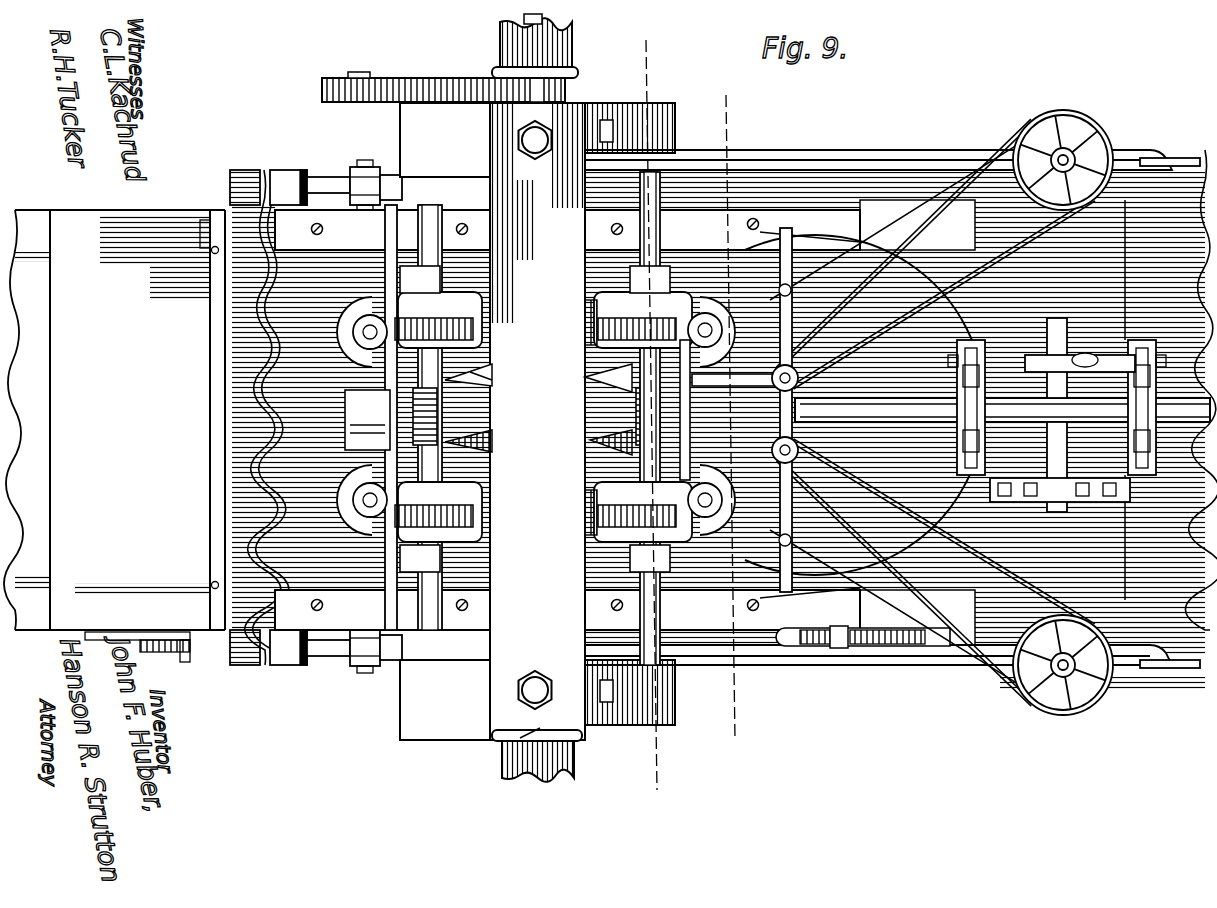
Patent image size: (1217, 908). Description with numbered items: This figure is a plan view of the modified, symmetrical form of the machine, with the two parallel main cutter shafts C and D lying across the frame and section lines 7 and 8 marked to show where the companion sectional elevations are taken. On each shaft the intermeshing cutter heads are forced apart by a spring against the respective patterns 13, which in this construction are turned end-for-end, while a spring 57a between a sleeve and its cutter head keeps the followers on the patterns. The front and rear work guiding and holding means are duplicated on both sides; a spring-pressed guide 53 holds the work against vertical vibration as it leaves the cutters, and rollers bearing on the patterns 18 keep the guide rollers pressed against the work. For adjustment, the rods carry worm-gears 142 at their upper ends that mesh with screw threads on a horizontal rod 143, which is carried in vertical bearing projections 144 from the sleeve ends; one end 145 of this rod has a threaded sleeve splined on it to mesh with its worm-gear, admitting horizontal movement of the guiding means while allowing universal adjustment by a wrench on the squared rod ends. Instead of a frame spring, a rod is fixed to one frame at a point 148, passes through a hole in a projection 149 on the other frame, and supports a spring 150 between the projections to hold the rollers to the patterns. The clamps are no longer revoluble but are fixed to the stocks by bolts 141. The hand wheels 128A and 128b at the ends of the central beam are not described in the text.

The pattern 13 is at (567, 420).
The pattern 18 is at (791, 415).
The spring-pressed guide 53 is at (492, 378).
The spring 57a is at (536, 409).
The lower hand wheel 128A is at (570, 778).
The upper hand wheel 128b is at (500, 42).
The bolt 141 is at (958, 358).
The worm-gear 142 is at (712, 320).
The horizontal rod 143 is at (351, 405).
The vertical bearing projection 144 is at (352, 352).
The end of rod 145 is at (400, 300).
The fixing point 148 is at (780, 462).
The projection 149 is at (773, 372).
The spring 150 is at (772, 450).
The section line 7- 7 is at (632, 90).
The section line 8- 8 is at (708, 128).
The main shaft C is at (535, 735).
The main shaft D is at (542, 18).